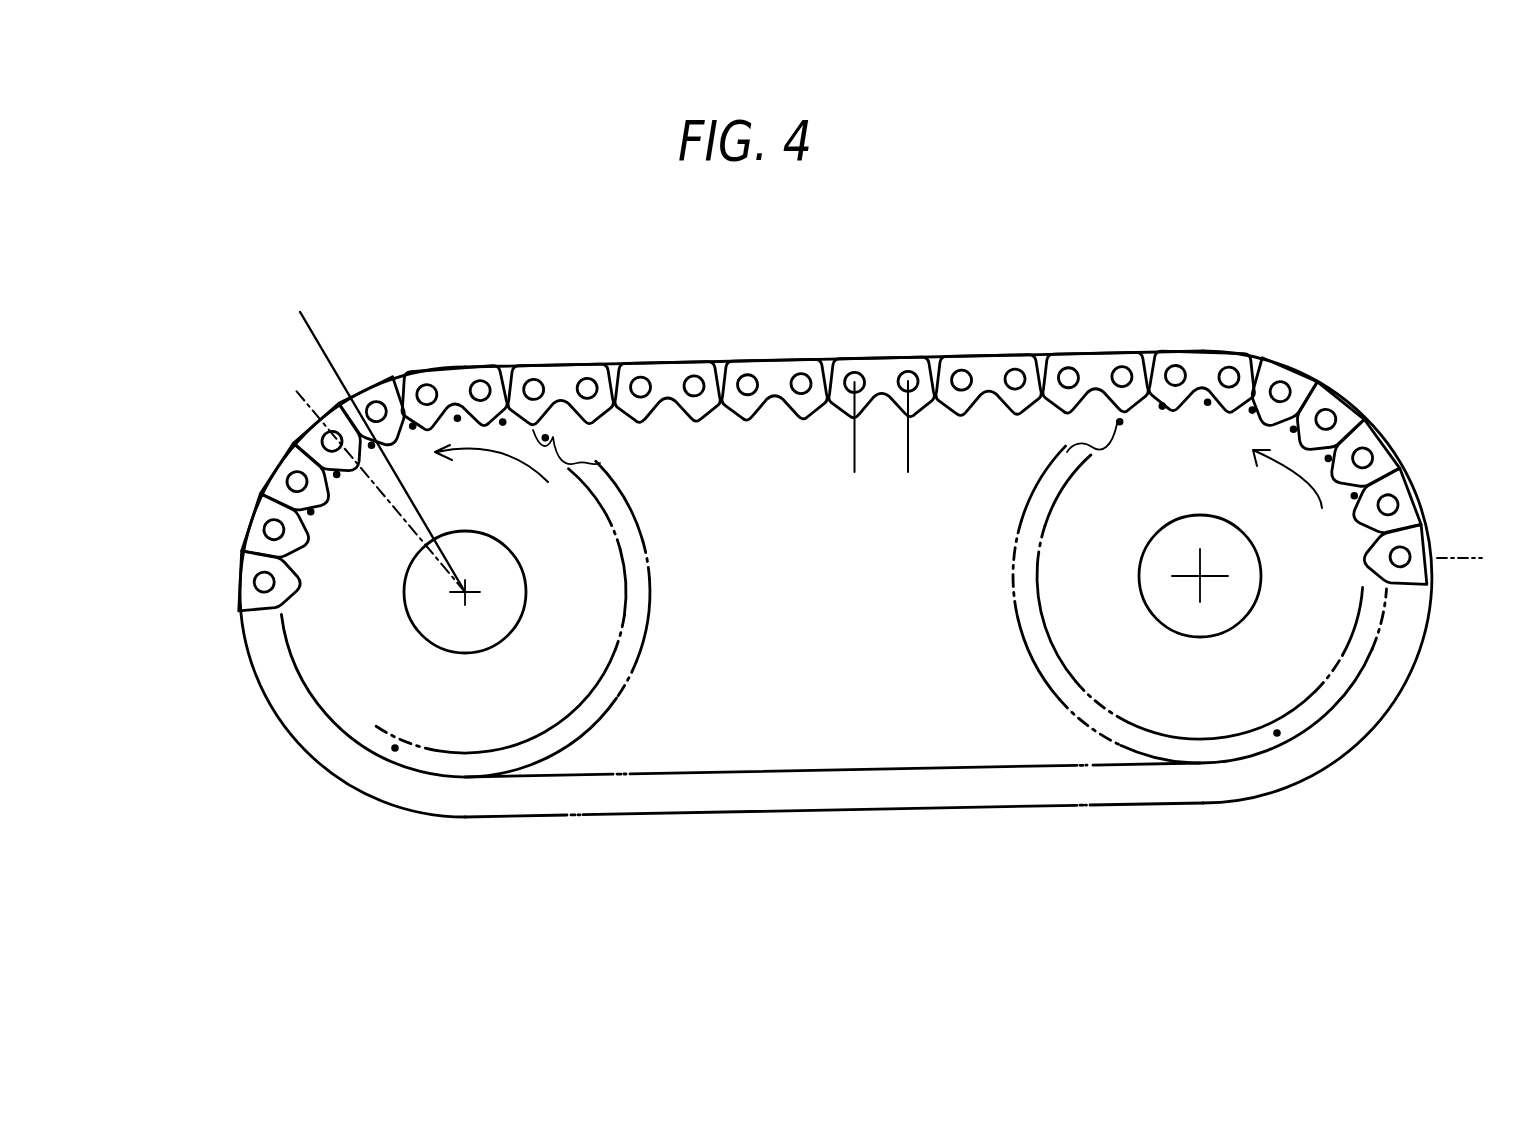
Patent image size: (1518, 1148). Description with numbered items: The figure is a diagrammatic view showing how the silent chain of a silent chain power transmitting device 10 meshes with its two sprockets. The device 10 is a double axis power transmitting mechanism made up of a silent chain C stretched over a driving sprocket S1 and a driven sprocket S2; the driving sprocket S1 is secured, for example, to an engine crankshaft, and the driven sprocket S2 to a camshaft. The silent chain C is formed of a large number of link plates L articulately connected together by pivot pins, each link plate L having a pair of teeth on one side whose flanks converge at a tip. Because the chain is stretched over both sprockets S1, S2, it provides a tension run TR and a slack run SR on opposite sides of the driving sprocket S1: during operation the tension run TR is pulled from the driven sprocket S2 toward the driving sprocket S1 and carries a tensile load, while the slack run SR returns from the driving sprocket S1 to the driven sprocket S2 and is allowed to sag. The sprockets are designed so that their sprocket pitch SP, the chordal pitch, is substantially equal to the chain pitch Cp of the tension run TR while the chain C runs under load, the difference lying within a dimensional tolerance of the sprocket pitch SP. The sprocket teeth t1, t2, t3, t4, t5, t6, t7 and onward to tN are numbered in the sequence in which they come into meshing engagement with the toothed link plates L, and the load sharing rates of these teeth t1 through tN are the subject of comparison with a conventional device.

The silent chain power transmitting device 10 is at (839, 314).
The silent chain C is at (977, 338).
The link plate L is at (657, 366).
The tension run TR is at (727, 363).
The slack run SR is at (755, 806).
The driving sprocket S1 is at (553, 545).
The driven sprocket S2 is at (1107, 575).
The sprocket pitch SP is at (300, 334).
The chain pitch Cp is at (897, 453).
The first sprocket tooth t1 is at (546, 435).
The second sprocket tooth t2 is at (503, 420).
The third sprocket tooth t3 is at (458, 416).
The fourth sprocket tooth t4 is at (412, 424).
The fifth sprocket tooth t5 is at (370, 443).
The sixth sprocket tooth t6 is at (336, 472).
The seventh sprocket tooth t7 is at (310, 510).
The N-th sprocket tooth tN is at (395, 748).